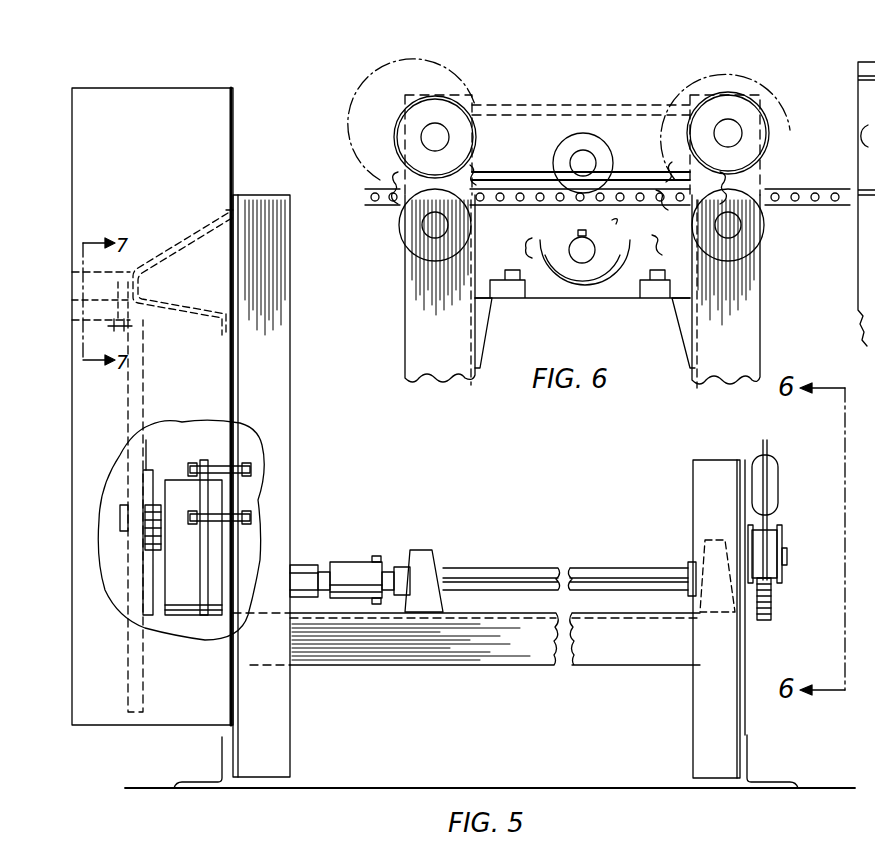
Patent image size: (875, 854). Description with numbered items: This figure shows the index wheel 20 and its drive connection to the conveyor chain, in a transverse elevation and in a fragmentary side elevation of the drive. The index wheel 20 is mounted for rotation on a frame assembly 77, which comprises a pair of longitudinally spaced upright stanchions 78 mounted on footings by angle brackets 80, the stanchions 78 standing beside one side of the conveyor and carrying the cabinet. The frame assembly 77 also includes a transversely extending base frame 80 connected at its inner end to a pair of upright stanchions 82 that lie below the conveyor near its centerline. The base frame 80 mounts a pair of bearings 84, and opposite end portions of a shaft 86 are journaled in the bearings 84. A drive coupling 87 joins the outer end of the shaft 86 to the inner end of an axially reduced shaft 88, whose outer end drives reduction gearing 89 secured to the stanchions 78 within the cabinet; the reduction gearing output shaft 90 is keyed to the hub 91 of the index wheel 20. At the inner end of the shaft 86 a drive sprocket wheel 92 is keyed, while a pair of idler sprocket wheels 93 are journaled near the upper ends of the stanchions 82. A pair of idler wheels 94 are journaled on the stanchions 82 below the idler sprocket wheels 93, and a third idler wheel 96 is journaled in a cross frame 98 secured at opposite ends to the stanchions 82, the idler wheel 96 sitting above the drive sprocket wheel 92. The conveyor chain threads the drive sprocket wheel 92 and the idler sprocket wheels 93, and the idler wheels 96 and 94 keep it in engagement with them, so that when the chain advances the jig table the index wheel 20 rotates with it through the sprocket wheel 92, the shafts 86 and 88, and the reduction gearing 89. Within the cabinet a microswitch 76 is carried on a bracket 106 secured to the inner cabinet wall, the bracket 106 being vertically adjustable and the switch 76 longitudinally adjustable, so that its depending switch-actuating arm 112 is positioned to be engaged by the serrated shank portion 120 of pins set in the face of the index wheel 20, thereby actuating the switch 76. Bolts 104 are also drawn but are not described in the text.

In FIG. 5, the index wheel 20 is at (126, 416).
In FIG. 5, the microswitch 76 is at (80, 273).
In FIG. 5, the frame assembly 77 is at (384, 684).
In FIG. 5, the upright stanchions 78 is at (290, 745).
In FIG. 6, the base frame 80 is at (538, 303).
In FIG. 5, the base frame 80 is at (492, 668).
In FIG. 6, the upright stanchions 82 is at (405, 302).
In FIG. 5, the upright stanchions 82 is at (693, 488).
In FIG. 5, the bearings 84 is at (425, 552).
In FIG. 6, the shaft 86 is at (572, 242).
In FIG. 5, the shaft 86 is at (500, 566).
In FIG. 5, the drive coupling 87 is at (350, 560).
In FIG. 5, the axially reduced shaft 88 is at (302, 562).
In FIG. 5, the reduction gearing 89 is at (196, 632).
In FIG. 5, the reduction gearing output shaft 90 is at (158, 500).
In FIG. 5, the hub 91 is at (152, 552).
In FIG. 6, the drive sprocket wheel 92 is at (628, 216).
In FIG. 5, the drive sprocket wheel 92 is at (772, 606).
In FIG. 6, the idler sprocket wheels 93 is at (497, 160).
In FIG. 6, the idler wheels 94 is at (399, 222).
In FIG. 5, the idler wheels 94 is at (782, 540).
In FIG. 6, the third idler wheel 96 is at (608, 145).
In FIG. 6, the cross frame 98 is at (588, 106).
In FIG. 5, the bolts 104 is at (215, 515).
In FIG. 5, the bracket 106 is at (175, 252).
In FIG. 5, the switch-actuating arm 112 is at (77, 301).
In FIG. 5, the shank portion 120 is at (79, 321).